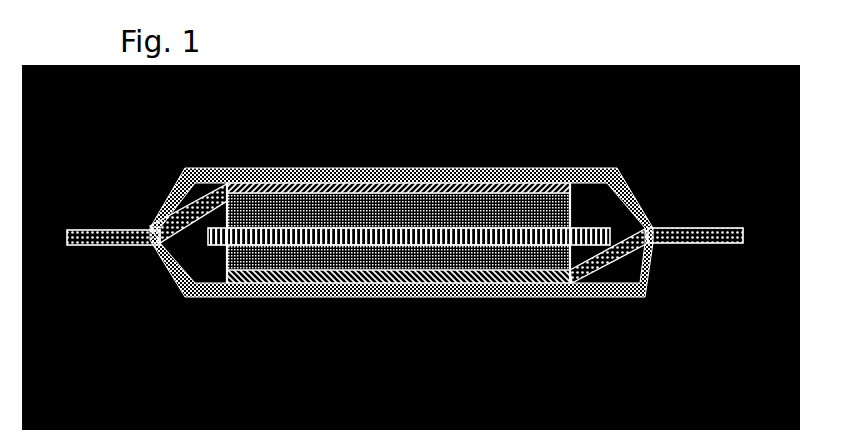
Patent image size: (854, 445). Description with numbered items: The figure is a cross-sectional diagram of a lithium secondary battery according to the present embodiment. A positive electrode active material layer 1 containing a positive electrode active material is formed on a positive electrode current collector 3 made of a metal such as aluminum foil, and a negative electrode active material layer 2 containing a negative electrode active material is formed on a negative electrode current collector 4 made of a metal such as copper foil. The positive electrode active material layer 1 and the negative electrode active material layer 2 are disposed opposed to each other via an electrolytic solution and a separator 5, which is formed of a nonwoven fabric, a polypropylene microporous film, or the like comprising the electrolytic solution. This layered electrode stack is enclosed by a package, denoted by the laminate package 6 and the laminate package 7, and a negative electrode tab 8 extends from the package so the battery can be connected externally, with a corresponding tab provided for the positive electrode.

The positive electrode active material layer 1 is at (365, 262).
The negative electrode active material layer 2 is at (373, 205).
The positive electrode current collector 3 is at (335, 285).
The negative electrode current collector 4 is at (312, 186).
The separator 5 is at (453, 240).
The laminate package 6 is at (298, 297).
The laminate package 7 is at (213, 170).
The negative electrode tab 8 is at (113, 245).